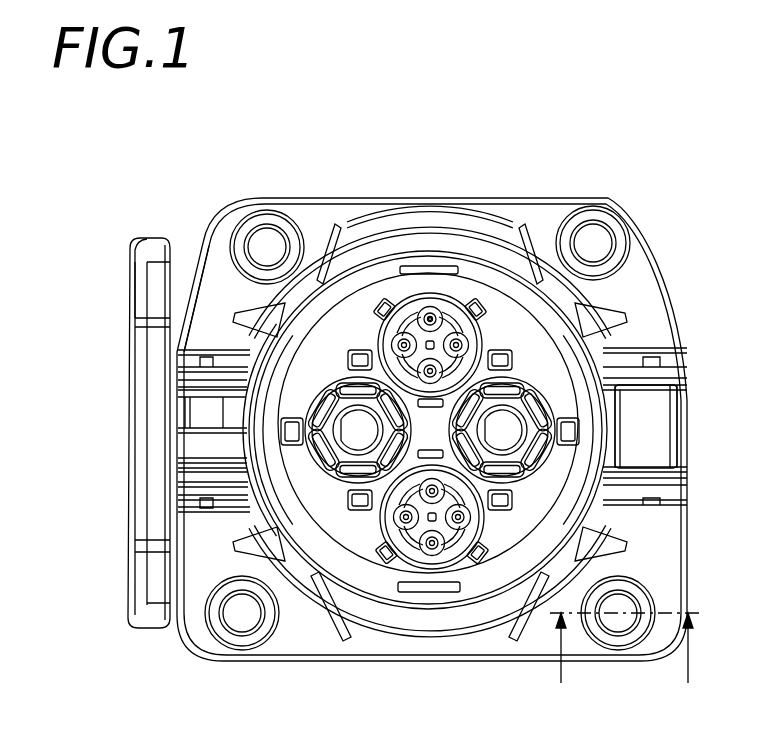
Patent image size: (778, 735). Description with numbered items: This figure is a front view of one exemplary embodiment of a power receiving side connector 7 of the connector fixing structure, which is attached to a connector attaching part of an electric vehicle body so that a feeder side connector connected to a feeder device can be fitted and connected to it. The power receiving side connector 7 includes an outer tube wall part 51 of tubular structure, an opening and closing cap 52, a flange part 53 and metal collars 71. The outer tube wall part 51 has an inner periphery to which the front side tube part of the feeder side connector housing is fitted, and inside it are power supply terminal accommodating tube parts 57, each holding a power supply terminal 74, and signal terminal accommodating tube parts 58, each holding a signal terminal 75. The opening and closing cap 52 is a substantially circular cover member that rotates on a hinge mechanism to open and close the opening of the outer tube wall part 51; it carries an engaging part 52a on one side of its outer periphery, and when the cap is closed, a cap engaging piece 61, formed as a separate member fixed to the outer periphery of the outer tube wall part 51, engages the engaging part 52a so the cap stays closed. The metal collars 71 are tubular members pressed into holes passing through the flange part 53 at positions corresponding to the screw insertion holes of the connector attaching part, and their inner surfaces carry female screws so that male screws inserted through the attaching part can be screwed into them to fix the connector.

The power receiving side connector 7 is at (483, 222).
The outer tube wall part 51 is at (543, 573).
The opening and closing cap 52 is at (150, 578).
The engaging part 52a is at (143, 410).
The flange part 53 is at (217, 262).
The power supply terminal accommodating tube part 57 is at (296, 432).
The signal terminal accommodating tube part 58 is at (425, 300).
The cap engaging piece 61 is at (640, 438).
The metal collar 71 is at (256, 232).
The power supply terminal 74 is at (351, 428).
The signal terminal 75 is at (402, 300).